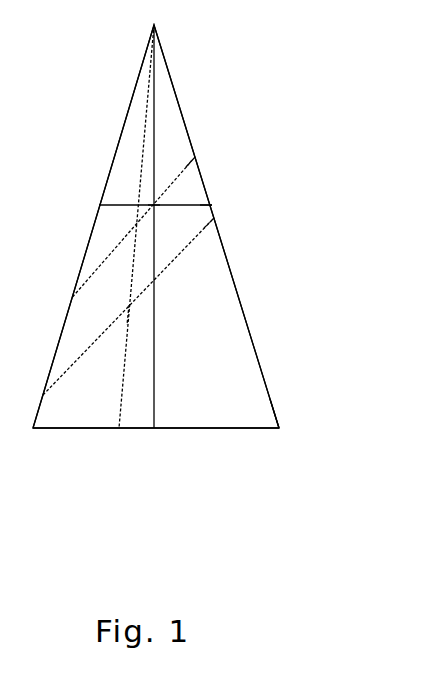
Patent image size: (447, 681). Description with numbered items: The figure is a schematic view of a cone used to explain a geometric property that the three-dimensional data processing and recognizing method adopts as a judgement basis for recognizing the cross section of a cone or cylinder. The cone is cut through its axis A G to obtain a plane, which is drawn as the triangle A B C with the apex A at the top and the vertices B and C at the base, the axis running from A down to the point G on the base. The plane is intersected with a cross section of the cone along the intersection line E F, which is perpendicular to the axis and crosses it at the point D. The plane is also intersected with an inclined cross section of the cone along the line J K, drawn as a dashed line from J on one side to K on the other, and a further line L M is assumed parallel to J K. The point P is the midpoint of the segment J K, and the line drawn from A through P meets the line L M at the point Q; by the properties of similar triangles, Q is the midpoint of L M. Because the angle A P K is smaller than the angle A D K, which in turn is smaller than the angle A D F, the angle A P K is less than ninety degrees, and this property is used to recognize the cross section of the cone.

The apex point A is at (156, 223).
The vertex B is at (147, 439).
The vertex C is at (283, 426).
The point G is at (159, 241).
The point E is at (147, 205).
The point F is at (213, 202).
The point D is at (159, 217).
The point J is at (127, 231).
The point K is at (200, 154).
The point L is at (120, 312).
The point M is at (219, 227).
The point P is at (136, 226).
The point Q is at (122, 308).